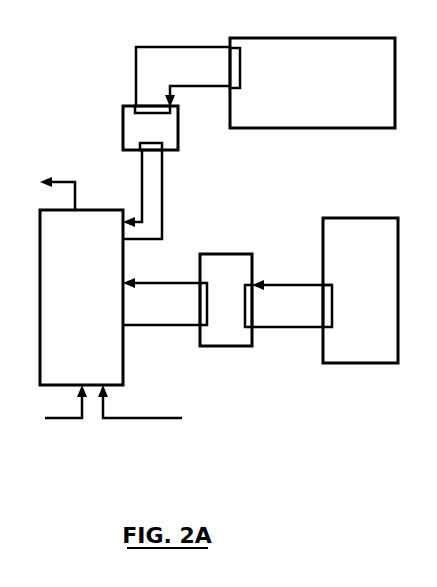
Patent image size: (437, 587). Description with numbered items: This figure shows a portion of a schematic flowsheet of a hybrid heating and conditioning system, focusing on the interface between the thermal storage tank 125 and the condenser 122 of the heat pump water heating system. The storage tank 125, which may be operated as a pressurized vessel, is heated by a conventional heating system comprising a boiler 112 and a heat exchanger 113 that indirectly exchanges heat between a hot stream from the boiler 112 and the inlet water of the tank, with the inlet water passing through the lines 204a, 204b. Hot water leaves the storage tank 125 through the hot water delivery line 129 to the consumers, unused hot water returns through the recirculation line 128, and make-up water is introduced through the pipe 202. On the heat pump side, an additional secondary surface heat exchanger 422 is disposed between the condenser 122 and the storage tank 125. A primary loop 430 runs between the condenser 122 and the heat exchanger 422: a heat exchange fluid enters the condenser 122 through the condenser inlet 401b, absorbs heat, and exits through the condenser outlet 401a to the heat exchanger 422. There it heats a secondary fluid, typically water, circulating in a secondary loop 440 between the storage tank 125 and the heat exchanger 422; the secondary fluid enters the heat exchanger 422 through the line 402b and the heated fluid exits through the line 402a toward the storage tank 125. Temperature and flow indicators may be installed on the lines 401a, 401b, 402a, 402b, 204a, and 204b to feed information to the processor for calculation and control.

The boiler 112 is at (312, 83).
The heat exchanger 113 is at (176, 98).
The thermal storage tank 125 is at (81, 297).
The condenser 122 is at (360, 290).
The secondary surface heat exchanger 422 is at (226, 300).
The hot water delivery line 129 is at (59, 186).
The line 204a is at (161, 194).
The line 204b is at (122, 188).
The line 402a is at (161, 274).
The line 402b is at (161, 314).
The condenser outlet 401a is at (292, 277).
The condenser inlet 401b is at (287, 317).
The recirculation line 128 is at (64, 401).
The pipe 202 is at (140, 401).
The secondary loop 440 is at (212, 231).
The primary loop 430 is at (286, 368).